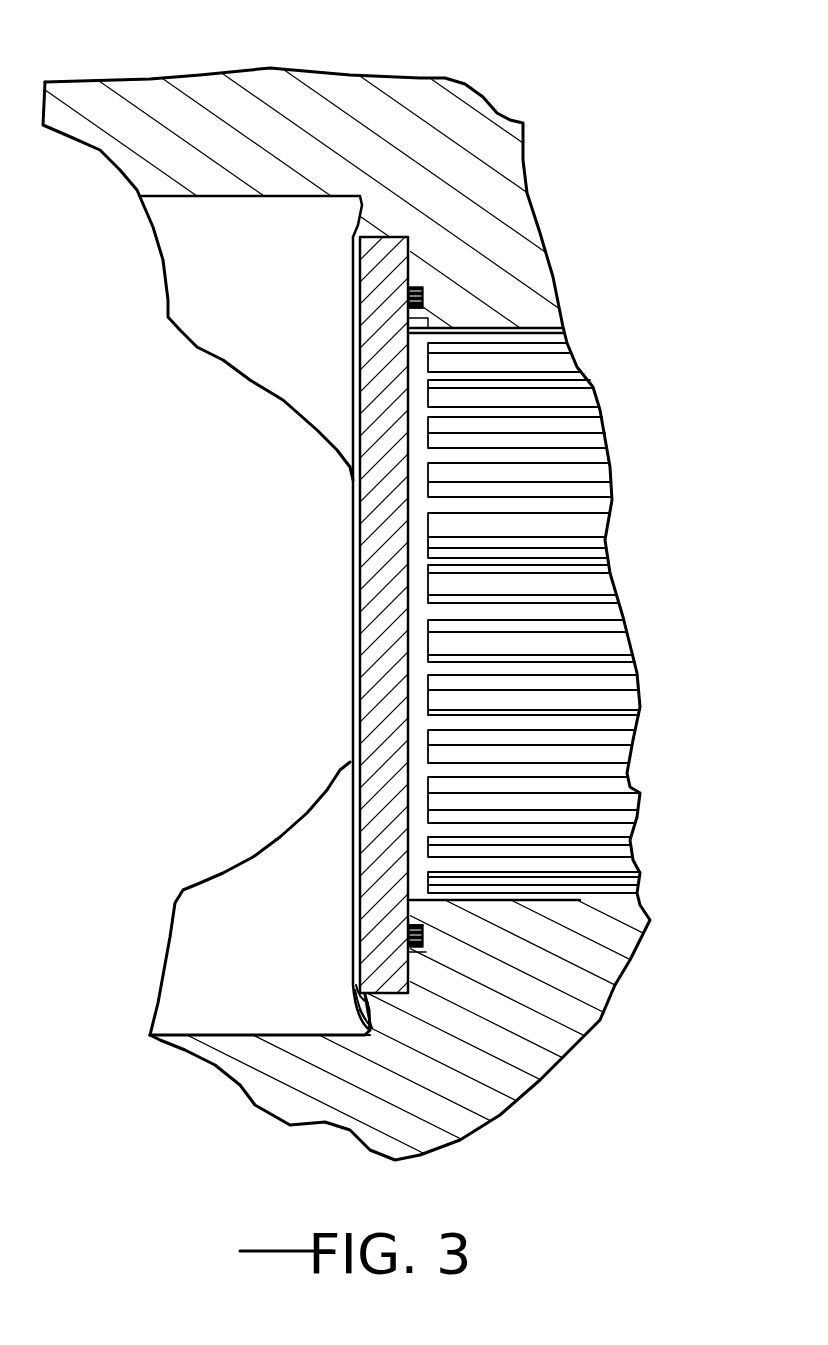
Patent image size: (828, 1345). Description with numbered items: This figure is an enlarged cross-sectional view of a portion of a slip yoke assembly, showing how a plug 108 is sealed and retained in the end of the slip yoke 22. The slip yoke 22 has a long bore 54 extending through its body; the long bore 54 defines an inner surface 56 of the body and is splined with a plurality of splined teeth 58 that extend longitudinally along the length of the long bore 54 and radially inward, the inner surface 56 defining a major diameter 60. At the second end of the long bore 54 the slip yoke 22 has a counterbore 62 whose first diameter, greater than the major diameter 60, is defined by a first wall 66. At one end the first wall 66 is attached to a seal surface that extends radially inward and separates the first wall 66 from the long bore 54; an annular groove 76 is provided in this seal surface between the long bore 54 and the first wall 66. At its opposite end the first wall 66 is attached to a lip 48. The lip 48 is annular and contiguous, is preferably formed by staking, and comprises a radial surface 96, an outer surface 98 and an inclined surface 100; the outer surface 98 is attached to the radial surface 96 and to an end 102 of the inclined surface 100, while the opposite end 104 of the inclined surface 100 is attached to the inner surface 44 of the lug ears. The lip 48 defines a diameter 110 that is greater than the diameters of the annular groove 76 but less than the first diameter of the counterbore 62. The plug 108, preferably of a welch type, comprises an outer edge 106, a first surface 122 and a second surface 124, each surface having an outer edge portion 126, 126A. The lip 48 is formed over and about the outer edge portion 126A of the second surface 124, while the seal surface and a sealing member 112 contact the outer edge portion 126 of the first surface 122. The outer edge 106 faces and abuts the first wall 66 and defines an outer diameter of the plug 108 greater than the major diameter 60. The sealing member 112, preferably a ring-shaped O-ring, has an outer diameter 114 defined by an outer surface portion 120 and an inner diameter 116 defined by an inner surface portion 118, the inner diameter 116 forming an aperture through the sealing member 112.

The slip yoke 22 is at (200, 88).
The inner surface 44 is at (176, 1035).
The lip 48 is at (380, 972).
The long bore 54 is at (620, 866).
The inner surface 56 is at (420, 927).
The splined teeth 58 is at (633, 852).
The major diameter 60 is at (418, 334).
The counterbore 62 is at (372, 995).
The first wall 66 is at (381, 993).
The annular groove 76 is at (420, 938).
The radial surface 96 is at (383, 990).
The outer surface 98 is at (368, 985).
The inclined surface 100 is at (370, 1010).
The end 102 is at (365, 1000).
The opposite end 104 is at (372, 1023).
The outer edge 106 is at (373, 245).
The plug 108 is at (381, 297).
The diameter 110 is at (352, 252).
The sealing member 112 is at (420, 950).
The outer diameter 114 is at (412, 275).
The inner diameter 116 is at (418, 305).
The inner surface portion 118 is at (423, 304).
The outer surface portion 120 is at (415, 288).
The first surface 122 is at (410, 267).
The second surface 124 is at (358, 358).
The outer edge portion 126 is at (409, 254).
The outer edge portion 126A is at (368, 242).